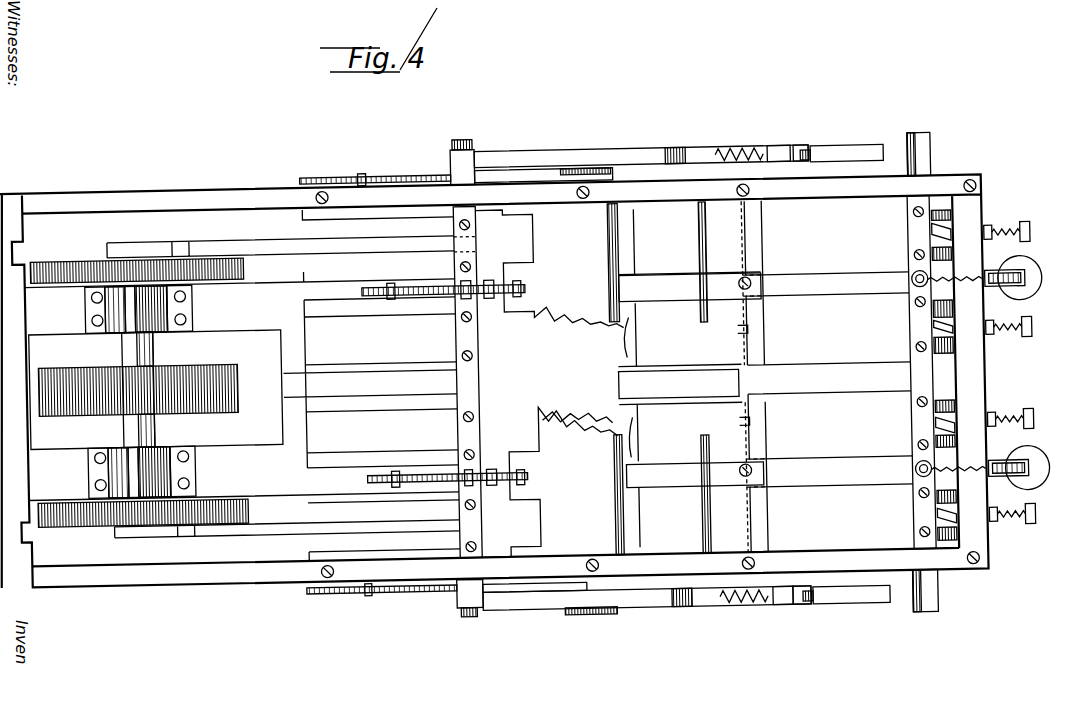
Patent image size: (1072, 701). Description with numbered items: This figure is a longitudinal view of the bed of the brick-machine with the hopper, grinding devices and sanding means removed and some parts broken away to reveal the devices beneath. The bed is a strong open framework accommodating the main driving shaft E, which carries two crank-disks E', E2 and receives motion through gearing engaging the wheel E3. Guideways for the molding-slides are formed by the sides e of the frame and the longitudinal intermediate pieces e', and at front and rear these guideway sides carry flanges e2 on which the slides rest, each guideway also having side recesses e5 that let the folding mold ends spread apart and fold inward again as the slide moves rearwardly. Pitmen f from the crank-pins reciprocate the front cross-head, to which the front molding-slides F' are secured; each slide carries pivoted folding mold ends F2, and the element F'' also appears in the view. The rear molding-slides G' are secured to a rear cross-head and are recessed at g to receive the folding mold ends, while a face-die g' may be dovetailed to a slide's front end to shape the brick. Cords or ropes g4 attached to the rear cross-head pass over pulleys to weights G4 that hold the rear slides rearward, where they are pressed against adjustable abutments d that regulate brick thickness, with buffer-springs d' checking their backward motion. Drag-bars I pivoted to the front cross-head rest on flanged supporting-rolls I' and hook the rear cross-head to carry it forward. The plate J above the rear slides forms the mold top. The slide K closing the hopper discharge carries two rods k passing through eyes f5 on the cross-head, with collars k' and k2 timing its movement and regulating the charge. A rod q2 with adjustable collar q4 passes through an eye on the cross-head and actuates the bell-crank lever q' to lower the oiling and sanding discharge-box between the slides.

The sides of the frame e is at (494, 384).
The intermediate pieces e' is at (544, 385).
The flanges e2 is at (362, 284).
The enlargement or recess e5 is at (643, 641).
The bell-crank lever q' is at (535, 614).
The rod q2 is at (298, 184).
The adjustable collar q4 is at (357, 180).
The drag-bars I is at (670, 378).
The flanged supporting-rolls I' is at (547, 381).
The abutments d is at (911, 415).
The buffer-springs d' is at (944, 391).
The shaft E is at (143, 391).
The crank-disk E' is at (137, 253).
The crank-disk E2 is at (79, 525).
The wheel E3 is at (260, 410).
The pitmen f is at (260, 251).
The eyes f5 is at (457, 304).
The rods k is at (444, 368).
The collar k' is at (504, 407).
The collar k2 is at (384, 305).
The slide K is at (551, 383).
The front molding-slides F' is at (513, 381).
The partition bar F'' is at (577, 410).
The folding mold ends F2 is at (672, 222).
The plate J is at (732, 377).
The recess g is at (769, 376).
The face-die g' is at (727, 379).
The cords or ropes g4 is at (911, 318).
The rear molding-slides G' is at (835, 381).
The weights G4 is at (1031, 314).